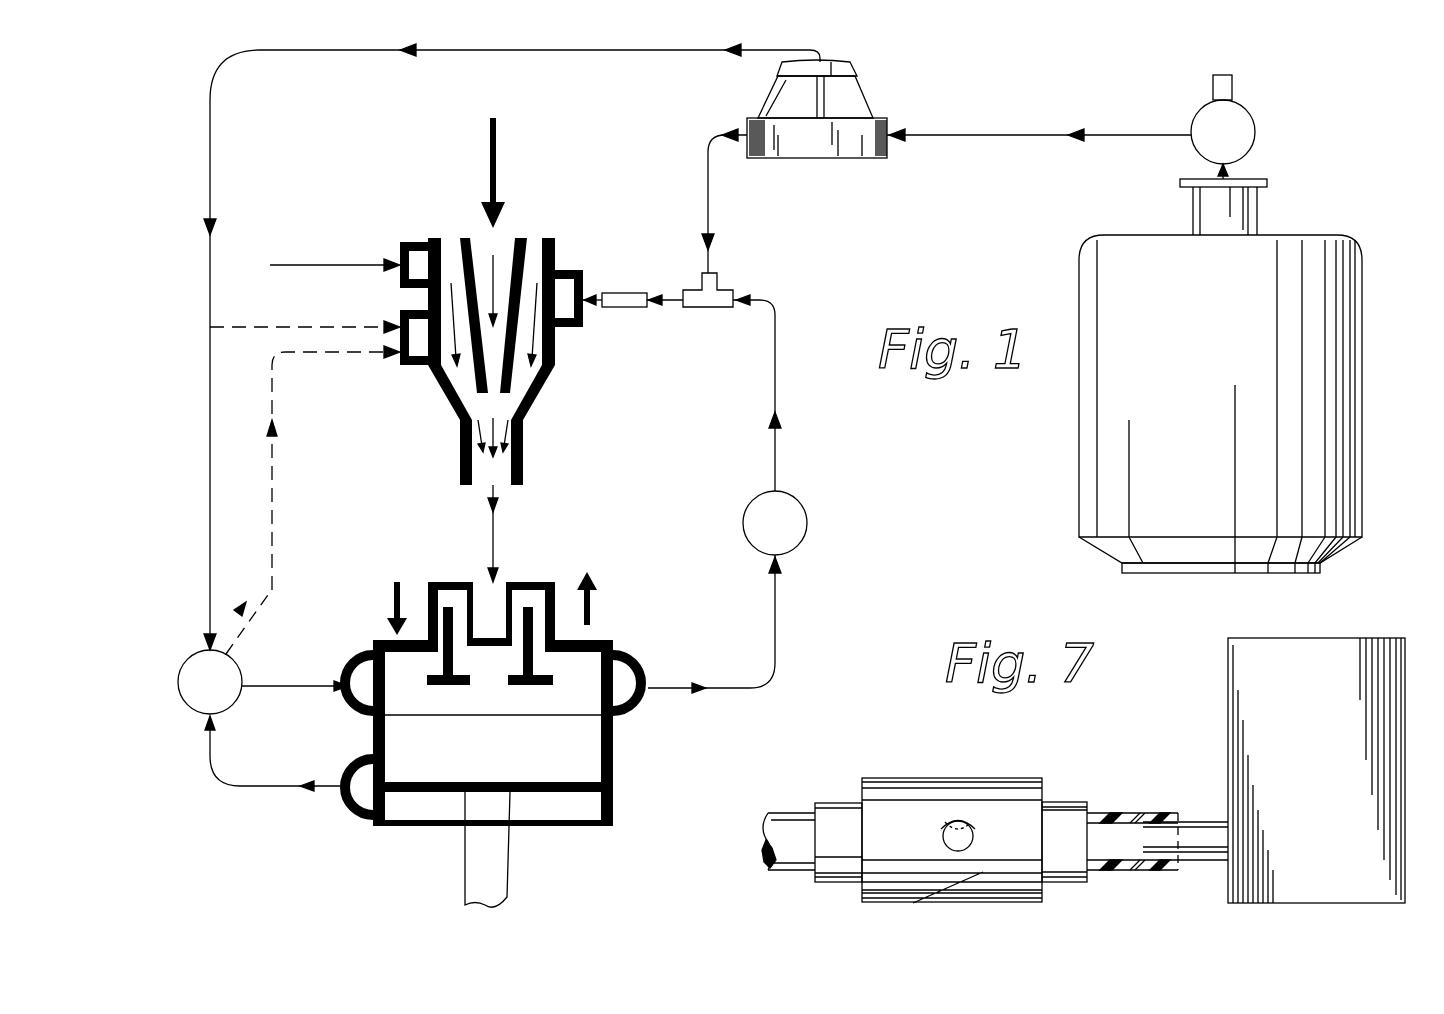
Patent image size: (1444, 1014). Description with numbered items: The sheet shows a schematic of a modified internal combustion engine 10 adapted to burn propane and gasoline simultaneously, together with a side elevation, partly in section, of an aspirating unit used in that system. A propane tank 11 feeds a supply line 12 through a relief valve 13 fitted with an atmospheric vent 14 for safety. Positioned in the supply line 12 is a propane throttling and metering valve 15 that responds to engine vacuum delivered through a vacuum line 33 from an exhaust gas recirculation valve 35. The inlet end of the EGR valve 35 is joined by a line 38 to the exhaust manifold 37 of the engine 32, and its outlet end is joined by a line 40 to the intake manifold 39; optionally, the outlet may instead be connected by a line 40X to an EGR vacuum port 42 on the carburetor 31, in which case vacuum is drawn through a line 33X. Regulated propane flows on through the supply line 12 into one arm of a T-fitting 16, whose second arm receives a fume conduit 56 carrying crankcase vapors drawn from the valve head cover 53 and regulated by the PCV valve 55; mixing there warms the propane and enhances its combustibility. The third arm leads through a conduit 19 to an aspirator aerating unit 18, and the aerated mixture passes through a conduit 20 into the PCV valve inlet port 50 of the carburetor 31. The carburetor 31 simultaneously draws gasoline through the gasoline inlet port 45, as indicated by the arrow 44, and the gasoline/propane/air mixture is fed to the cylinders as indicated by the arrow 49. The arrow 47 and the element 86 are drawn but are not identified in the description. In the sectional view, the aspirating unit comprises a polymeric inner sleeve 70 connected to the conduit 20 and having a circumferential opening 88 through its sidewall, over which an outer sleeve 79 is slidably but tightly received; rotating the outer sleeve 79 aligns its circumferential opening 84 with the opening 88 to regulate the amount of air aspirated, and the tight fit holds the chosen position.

In FIG. 1, the modified internal combustion engine 10 is at (1340, 156).
In FIG. 1, the propane tank 11 is at (1112, 397).
In FIG. 1, the supply line 12 is at (708, 172).
In FIG. 1, the relief valve 13 is at (1256, 128).
In FIG. 1, the atmospheric vent 14 is at (1228, 88).
In FIG. 1, the propane throttling and metering valve 15 is at (866, 188).
In FIG. 1, the T-fitting 16 is at (720, 283).
In FIG. 1, the aspirator aerating unit 18 is at (645, 320).
In FIG. 1, the conduit 19 is at (668, 297).
In FIG. 7, the conduit 19 is at (795, 855).
In FIG. 1, the conduit 20 is at (588, 305).
In FIG. 7, the conduit 20 is at (1105, 815).
In FIG. 1, the carburetor 31 is at (545, 427).
In FIG. 7, the carburetor 31 is at (1192, 702).
In FIG. 1, the engine 32 is at (652, 801).
In FIG. 1, the vacuum line 33 is at (608, 51).
In FIG. 1, the vacuum line 33X is at (258, 327).
In FIG. 1, the exhaust gas recirculation valve 35 is at (205, 710).
In FIG. 1, the exhaust manifold 37 is at (365, 815).
In FIG. 1, the line 38 is at (260, 786).
In FIG. 1, the intake manifold 39 is at (365, 655).
In FIG. 1, the line 40 is at (265, 687).
In FIG. 1, the line 40X is at (274, 490).
In FIG. 1, the EGR vacuum port 42 is at (420, 366).
In FIG. 1, the arrow 44 is at (300, 265).
In FIG. 1, the gasoline inlet port 45 is at (415, 238).
In FIG. 1, the intake air flow 47 is at (496, 160).
In FIG. 1, the arrow 49 is at (495, 528).
In FIG. 1, the PCV valve inlet port 50 is at (566, 270).
In FIG. 7, the PCV valve inlet port 50 is at (1207, 840).
In FIG. 1, the valve head cover 53 is at (633, 660).
In FIG. 1, the PCV valve 55 is at (800, 540).
In FIG. 1, the fume conduit 56 is at (778, 385).
In FIG. 7, the inner sleeve 70 is at (838, 850).
In FIG. 7, the outer sleeve 79 is at (967, 797).
In FIG. 7, the circumferential opening 84 is at (962, 851).
In FIG. 7, the fitting 86 is at (1068, 818).
In FIG. 7, the circumferential opening 88 is at (958, 815).